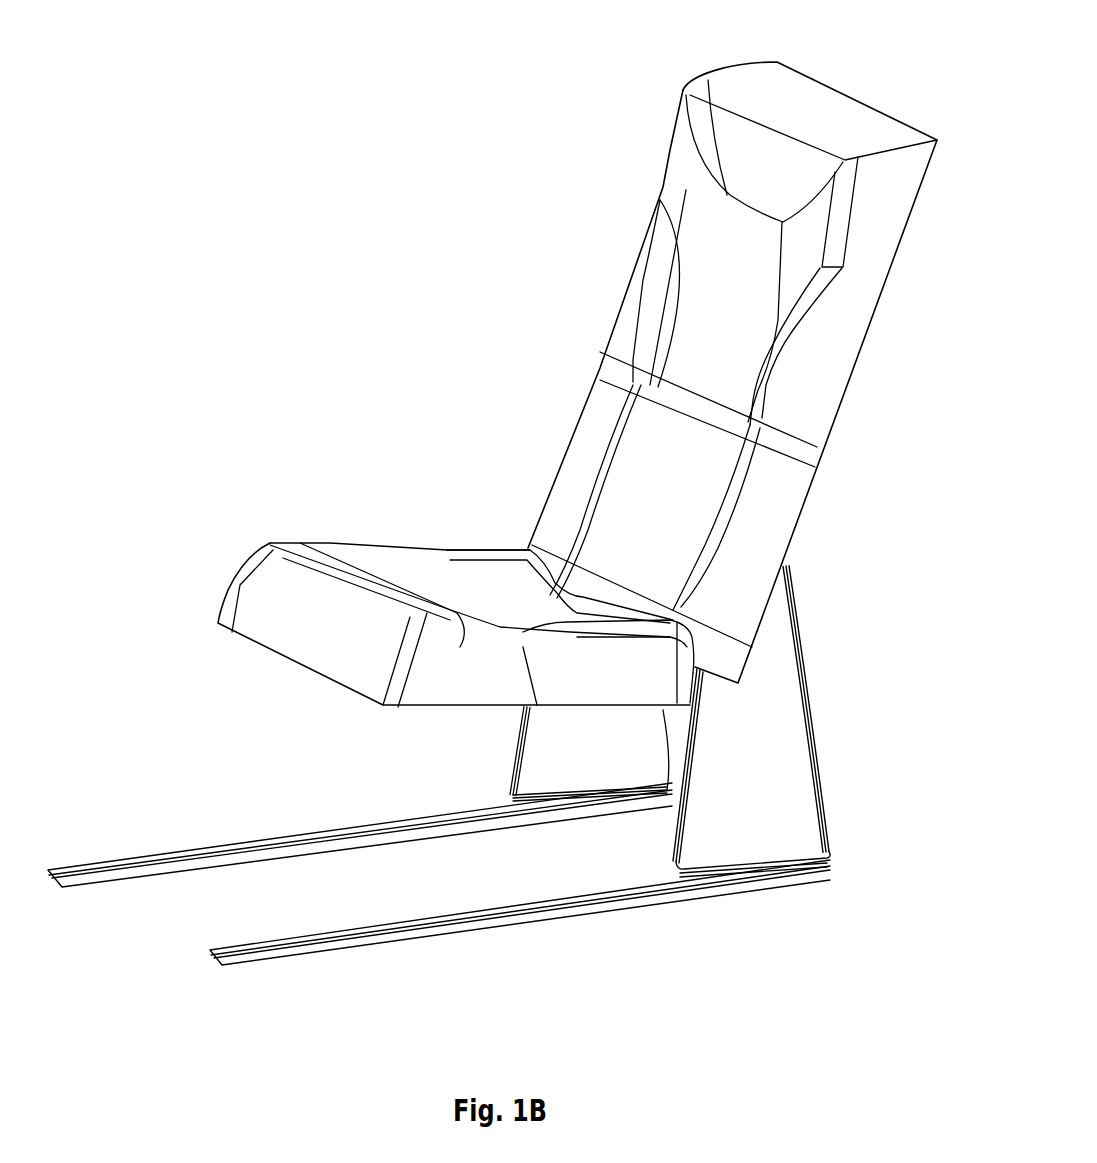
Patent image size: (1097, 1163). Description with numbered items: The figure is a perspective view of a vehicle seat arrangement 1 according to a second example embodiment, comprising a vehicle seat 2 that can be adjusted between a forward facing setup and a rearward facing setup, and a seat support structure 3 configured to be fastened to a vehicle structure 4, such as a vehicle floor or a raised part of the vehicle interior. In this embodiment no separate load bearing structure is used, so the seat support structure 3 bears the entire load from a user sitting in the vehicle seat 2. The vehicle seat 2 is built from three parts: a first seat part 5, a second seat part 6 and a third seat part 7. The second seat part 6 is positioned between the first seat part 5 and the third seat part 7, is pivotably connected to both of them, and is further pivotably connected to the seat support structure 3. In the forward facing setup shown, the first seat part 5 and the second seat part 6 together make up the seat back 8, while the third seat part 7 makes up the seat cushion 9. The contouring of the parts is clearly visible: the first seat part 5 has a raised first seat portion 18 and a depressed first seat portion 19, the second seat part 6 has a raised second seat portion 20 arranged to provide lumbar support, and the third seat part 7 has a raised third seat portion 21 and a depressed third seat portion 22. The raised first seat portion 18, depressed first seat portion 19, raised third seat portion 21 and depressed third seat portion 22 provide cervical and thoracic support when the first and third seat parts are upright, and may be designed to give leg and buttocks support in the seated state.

The vehicle seat arrangement 1 is at (352, 131).
The vehicle seat 2 is at (350, 223).
The seat support structure 3 is at (820, 757).
The vehicle structure 4 is at (120, 944).
The first seat part 5 is at (866, 345).
The second seat part 6 is at (795, 543).
The third seat part 7 is at (238, 578).
The seat back 8 is at (853, 468).
The seat cushion 9 is at (203, 668).
The raised first seat portion 18 is at (762, 158).
The depressed first seat portion 19 is at (733, 253).
The raised second seat portion 20 is at (637, 503).
The raised third seat portion 21 is at (377, 570).
The depressed third seat portion 22 is at (497, 607).